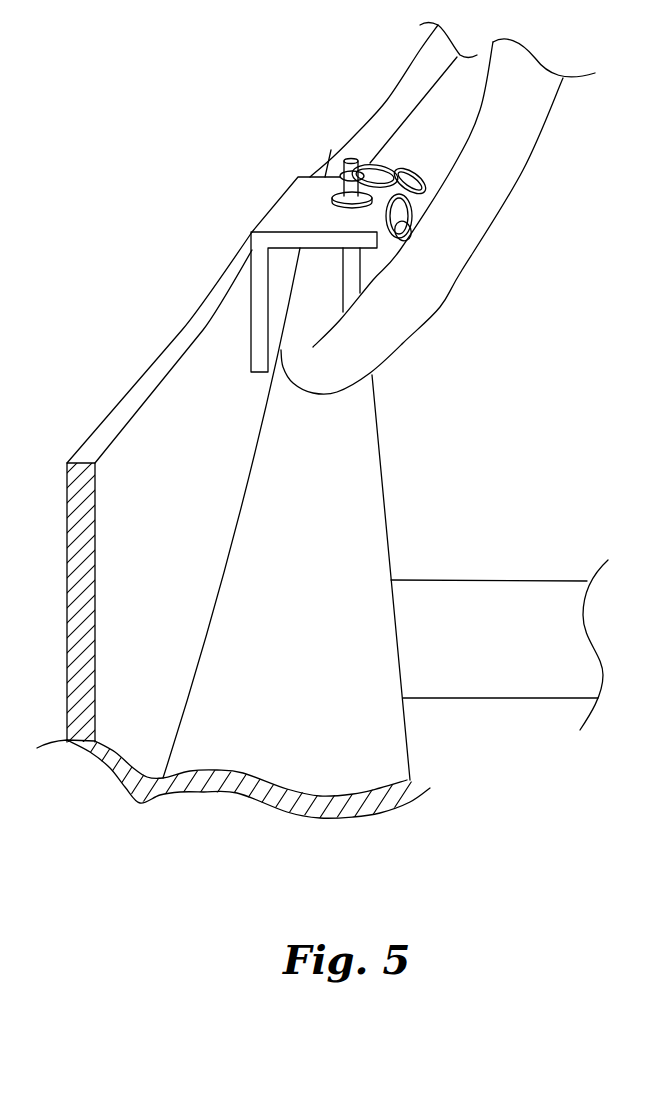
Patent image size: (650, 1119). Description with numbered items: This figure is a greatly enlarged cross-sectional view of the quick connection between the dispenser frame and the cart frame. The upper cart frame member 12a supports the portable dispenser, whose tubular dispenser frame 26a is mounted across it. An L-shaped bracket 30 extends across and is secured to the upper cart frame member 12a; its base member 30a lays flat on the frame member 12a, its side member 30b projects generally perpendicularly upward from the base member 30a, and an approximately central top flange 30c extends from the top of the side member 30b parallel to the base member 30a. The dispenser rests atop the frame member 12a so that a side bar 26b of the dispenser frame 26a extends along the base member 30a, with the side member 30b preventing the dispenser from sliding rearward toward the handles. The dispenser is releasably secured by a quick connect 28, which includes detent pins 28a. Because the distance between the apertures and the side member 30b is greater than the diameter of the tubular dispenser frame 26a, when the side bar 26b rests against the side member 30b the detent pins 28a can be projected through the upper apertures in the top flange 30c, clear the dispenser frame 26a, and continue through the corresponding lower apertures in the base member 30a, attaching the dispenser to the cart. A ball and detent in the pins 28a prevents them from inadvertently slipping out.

The upper cart frame member 12a is at (507, 588).
The tubular dispenser frame 26a is at (473, 198).
The side bar 26b is at (312, 278).
The quick connect 28 is at (353, 210).
The detent pin 28a is at (352, 278).
The L-shaped bracket 30 is at (233, 735).
The base member 30a is at (382, 748).
The side member 30b is at (130, 463).
The top flange 30c is at (298, 203).